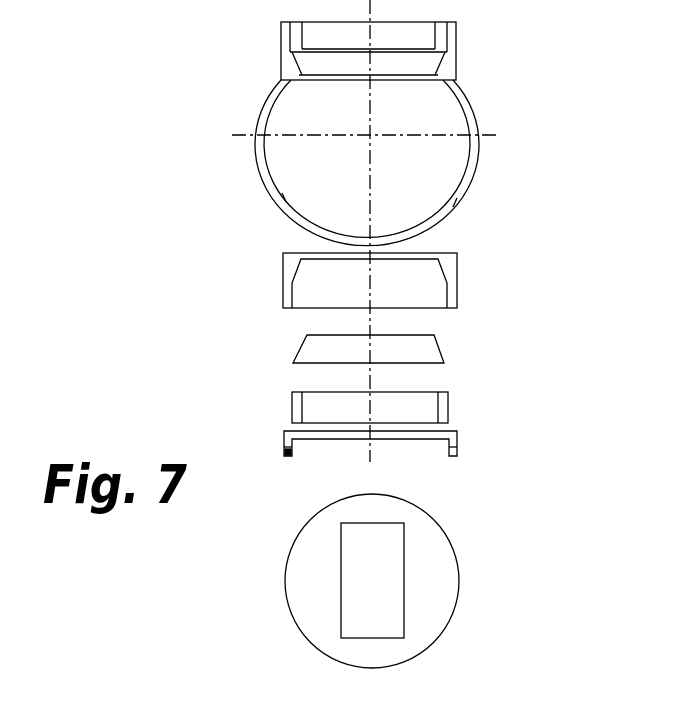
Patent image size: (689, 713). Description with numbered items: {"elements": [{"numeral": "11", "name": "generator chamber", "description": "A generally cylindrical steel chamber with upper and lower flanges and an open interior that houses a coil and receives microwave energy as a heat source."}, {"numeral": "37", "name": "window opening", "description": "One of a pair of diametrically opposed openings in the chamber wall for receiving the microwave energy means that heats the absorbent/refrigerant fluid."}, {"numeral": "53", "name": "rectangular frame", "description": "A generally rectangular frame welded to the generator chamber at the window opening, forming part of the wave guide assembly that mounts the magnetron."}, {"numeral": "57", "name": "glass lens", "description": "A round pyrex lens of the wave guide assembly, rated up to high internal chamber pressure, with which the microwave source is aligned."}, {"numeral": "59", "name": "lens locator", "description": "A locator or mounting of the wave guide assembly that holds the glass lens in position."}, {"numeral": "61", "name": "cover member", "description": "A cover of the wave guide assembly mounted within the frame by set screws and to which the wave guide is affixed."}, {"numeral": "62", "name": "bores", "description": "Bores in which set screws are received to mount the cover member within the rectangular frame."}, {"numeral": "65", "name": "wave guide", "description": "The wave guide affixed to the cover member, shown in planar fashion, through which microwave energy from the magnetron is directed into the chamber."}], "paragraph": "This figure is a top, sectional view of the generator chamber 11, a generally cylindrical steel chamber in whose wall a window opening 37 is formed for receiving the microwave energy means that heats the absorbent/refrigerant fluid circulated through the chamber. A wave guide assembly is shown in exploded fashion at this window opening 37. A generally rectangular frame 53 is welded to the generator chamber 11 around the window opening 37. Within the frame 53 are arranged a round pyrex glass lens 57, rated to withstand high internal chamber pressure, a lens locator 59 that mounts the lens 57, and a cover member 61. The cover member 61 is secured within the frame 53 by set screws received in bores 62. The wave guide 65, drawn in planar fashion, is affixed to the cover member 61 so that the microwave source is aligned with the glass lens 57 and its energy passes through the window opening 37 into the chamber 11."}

The watch case 11 is at (477, 103).
The notch in case 37 is at (452, 206).
The movement holder ring 53 is at (457, 277).
The spacer 57 is at (441, 352).
The battery holder frame 59 is at (448, 399).
The bracket plate 61 is at (457, 436).
The tab of bracket 62 is at (283, 447).
The case back 65 is at (446, 546).